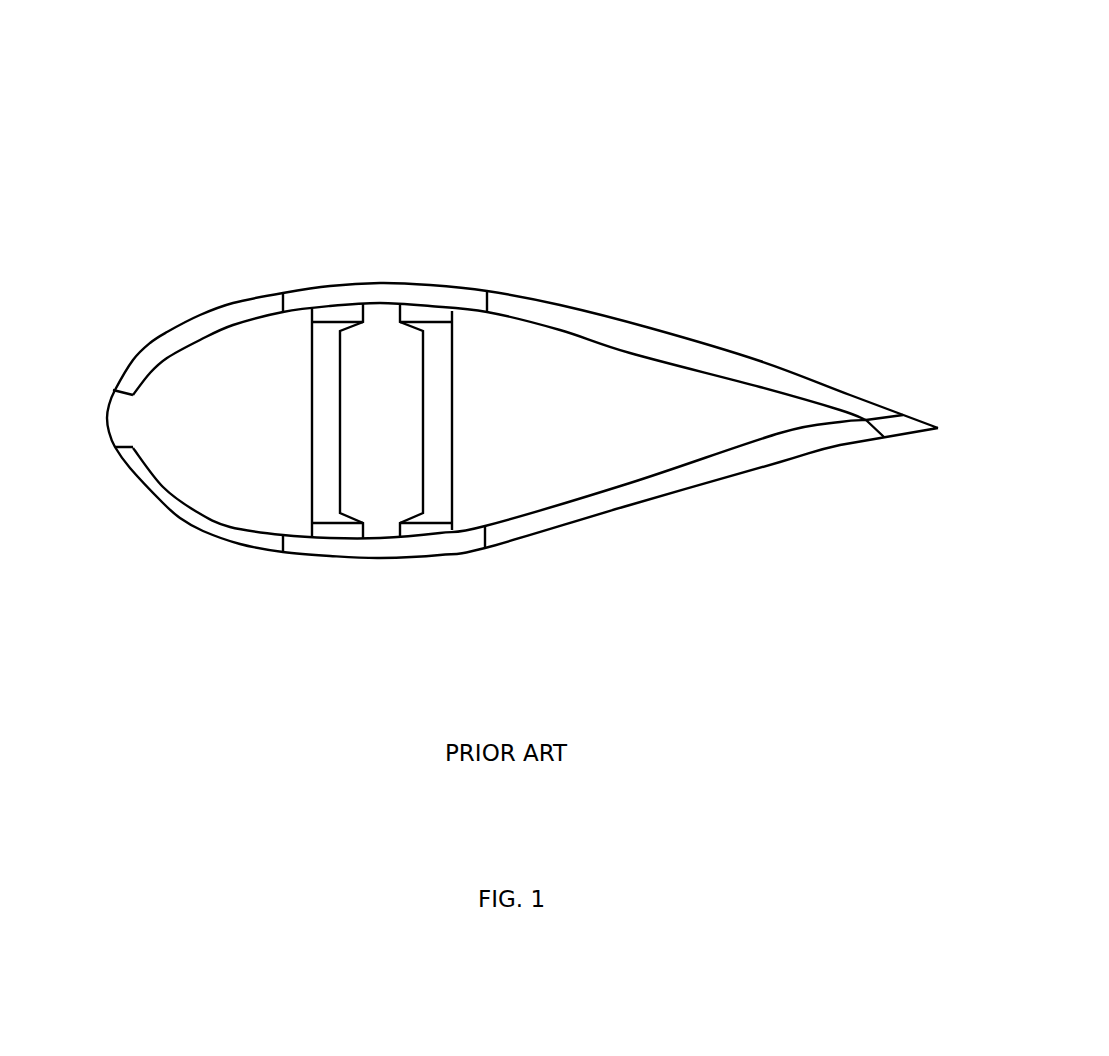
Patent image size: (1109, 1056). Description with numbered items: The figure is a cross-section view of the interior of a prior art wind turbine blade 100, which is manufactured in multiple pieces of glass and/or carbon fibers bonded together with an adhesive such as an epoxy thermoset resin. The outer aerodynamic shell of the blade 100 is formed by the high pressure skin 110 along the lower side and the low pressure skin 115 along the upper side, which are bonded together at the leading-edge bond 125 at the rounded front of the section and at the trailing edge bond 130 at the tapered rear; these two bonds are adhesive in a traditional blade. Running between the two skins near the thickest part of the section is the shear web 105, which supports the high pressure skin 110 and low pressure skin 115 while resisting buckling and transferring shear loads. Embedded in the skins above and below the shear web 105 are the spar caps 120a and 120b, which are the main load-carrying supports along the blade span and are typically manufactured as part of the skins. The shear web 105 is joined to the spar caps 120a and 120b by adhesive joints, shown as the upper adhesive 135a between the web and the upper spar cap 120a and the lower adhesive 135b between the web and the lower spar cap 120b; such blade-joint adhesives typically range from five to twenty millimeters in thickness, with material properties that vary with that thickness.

The blade 100 is at (610, 115).
The shear web 105 is at (445, 388).
The high pressure skin 110 is at (203, 532).
The low pressure skin 115 is at (649, 317).
The spar cap 120a is at (380, 287).
The spar cap 120b is at (372, 557).
The leading-edge bond 125 is at (108, 421).
The trailing edge bond 130 is at (904, 428).
The upper adhesive 135a is at (308, 316).
The lower adhesive 135b is at (309, 527).